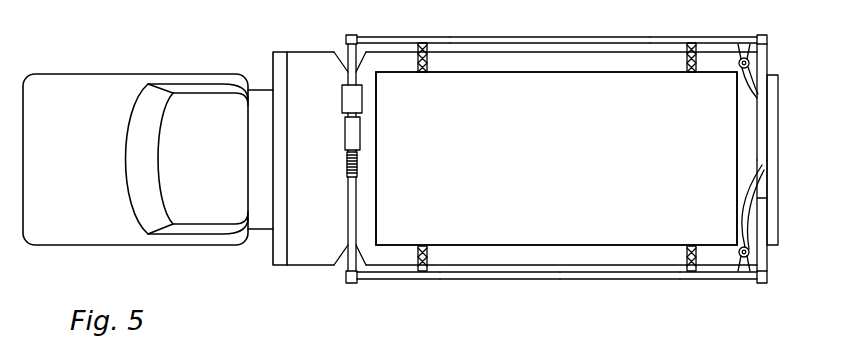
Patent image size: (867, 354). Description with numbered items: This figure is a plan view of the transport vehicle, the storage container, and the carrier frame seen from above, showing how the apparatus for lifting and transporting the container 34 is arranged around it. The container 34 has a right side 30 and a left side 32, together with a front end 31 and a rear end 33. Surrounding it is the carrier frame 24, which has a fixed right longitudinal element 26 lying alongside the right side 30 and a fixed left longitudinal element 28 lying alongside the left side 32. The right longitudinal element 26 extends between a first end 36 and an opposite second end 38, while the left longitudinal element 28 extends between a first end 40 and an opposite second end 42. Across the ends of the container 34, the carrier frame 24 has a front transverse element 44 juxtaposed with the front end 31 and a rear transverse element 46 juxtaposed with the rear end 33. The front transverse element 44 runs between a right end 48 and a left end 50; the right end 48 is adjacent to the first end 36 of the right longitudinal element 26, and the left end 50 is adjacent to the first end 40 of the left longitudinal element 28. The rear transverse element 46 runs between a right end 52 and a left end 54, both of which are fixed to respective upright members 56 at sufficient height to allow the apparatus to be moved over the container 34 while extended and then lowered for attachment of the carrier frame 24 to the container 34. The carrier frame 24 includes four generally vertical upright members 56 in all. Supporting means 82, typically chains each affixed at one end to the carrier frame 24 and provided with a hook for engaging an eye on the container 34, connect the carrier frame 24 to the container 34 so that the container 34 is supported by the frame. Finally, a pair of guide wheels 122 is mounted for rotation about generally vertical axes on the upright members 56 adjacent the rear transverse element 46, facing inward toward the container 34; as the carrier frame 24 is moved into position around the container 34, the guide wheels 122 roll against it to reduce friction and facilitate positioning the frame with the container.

The carrier frame 24 is at (521, 282).
The right longitudinal element 26 is at (598, 36).
The left longitudinal element 28 is at (582, 282).
The right side of container 30 is at (548, 73).
The front end of container 31 is at (378, 128).
The left side of container 32 is at (660, 245).
The rear end of container 33 is at (736, 155).
The container 34 is at (498, 194).
The first end of right longitudinal element 36 is at (364, 36).
The second end of right longitudinal element 38 is at (749, 36).
The first end of left longitudinal element 40 is at (373, 282).
The second end of left longitudinal element 42 is at (745, 282).
The front transverse element 44 is at (348, 212).
The rear transverse element 46 is at (779, 220).
The right end of front transverse element 48 is at (345, 39).
The left end of front transverse element 50 is at (348, 267).
The right end of rear transverse element 52 is at (769, 60).
The left end of rear transverse element 54 is at (768, 262).
The upright member 56 is at (350, 34).
The supporting means 82 is at (428, 62).
The guide wheel 122 is at (760, 93).